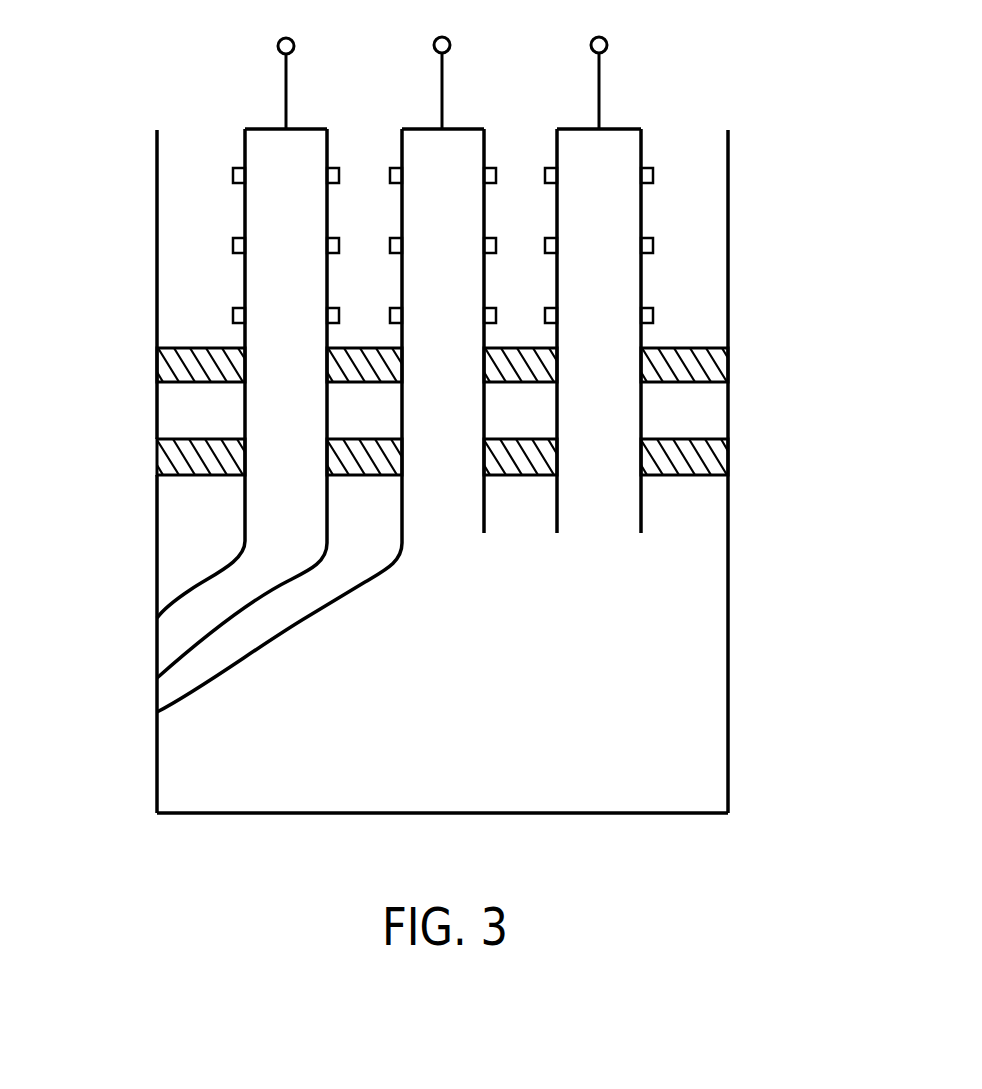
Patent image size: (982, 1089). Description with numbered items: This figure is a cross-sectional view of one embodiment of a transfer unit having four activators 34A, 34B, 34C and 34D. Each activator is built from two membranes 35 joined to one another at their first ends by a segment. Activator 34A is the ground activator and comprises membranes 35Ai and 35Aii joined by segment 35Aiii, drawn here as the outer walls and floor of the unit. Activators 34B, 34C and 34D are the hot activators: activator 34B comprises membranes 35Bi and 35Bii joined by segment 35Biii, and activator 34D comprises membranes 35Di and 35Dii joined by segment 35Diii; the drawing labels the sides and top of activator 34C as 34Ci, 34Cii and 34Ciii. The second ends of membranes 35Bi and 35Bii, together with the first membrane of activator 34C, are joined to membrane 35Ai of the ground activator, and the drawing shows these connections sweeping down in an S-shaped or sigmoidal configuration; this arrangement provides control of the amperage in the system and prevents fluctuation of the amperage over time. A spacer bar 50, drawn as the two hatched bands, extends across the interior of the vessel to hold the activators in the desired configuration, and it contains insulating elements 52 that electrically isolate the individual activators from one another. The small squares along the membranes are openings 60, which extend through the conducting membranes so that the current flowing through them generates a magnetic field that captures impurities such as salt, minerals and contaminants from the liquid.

The ground activator 34A is at (124, 150).
The hot activator 34B is at (235, 341).
The hot activator 34C is at (347, 358).
The hot activator 34D is at (666, 282).
The first side of electrode 34C 34Ci is at (380, 150).
The second side of electrode 34C 34Cii is at (462, 294).
The top of electrode 34C 34Ciii is at (491, 108).
The membranes 35 is at (268, 400).
The membrane 35Ai is at (136, 556).
The membrane 35Aii is at (750, 585).
The segment 35Aiii is at (581, 826).
The membrane 35Bi is at (220, 213).
The membrane 35Bii is at (305, 293).
The segment 35Biii is at (334, 109).
The membrane 35Di is at (578, 219).
The membrane 35Dii is at (670, 279).
The segment 35Diii is at (643, 108).
The spacer bar 50 is at (718, 364).
The insulating elements 52 is at (673, 494).
The openings 60 is at (675, 241).